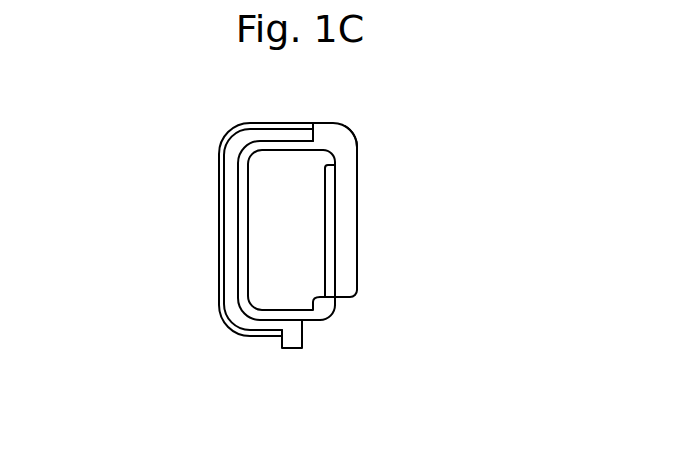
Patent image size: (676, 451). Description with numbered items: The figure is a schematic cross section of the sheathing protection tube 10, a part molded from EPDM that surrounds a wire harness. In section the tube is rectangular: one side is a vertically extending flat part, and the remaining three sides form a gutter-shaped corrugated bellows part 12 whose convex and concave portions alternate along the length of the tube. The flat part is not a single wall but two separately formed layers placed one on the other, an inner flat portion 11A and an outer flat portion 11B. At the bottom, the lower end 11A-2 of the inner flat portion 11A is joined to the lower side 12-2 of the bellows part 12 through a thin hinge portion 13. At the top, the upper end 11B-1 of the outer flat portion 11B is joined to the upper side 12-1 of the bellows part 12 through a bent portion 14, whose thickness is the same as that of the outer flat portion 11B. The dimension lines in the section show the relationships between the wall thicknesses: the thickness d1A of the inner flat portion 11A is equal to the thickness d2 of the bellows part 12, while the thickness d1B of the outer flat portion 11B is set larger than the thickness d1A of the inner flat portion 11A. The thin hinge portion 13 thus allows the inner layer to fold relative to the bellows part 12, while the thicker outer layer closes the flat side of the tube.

The sheathing protection tube 10 is at (142, 87).
The inner flat portion 11A is at (330, 230).
The lower end of the inner flat portion 11A-2 is at (336, 298).
The outer flat portion 11B is at (347, 203).
The upper end of the outer flat portion 11B-1 is at (353, 134).
The bellows part 12 is at (220, 180).
The upper side of the bellows part 12-1 is at (312, 124).
The lower side of the bellows part 12-2 is at (303, 324).
The thin hinge portion 13 is at (332, 306).
The bent portion 14 is at (328, 127).
The thickness of the bellows part d2 is at (256, 236).
The thickness of the outer flat portion d1B is at (298, 183).
The thickness of the inner flat portion d1A is at (300, 277).